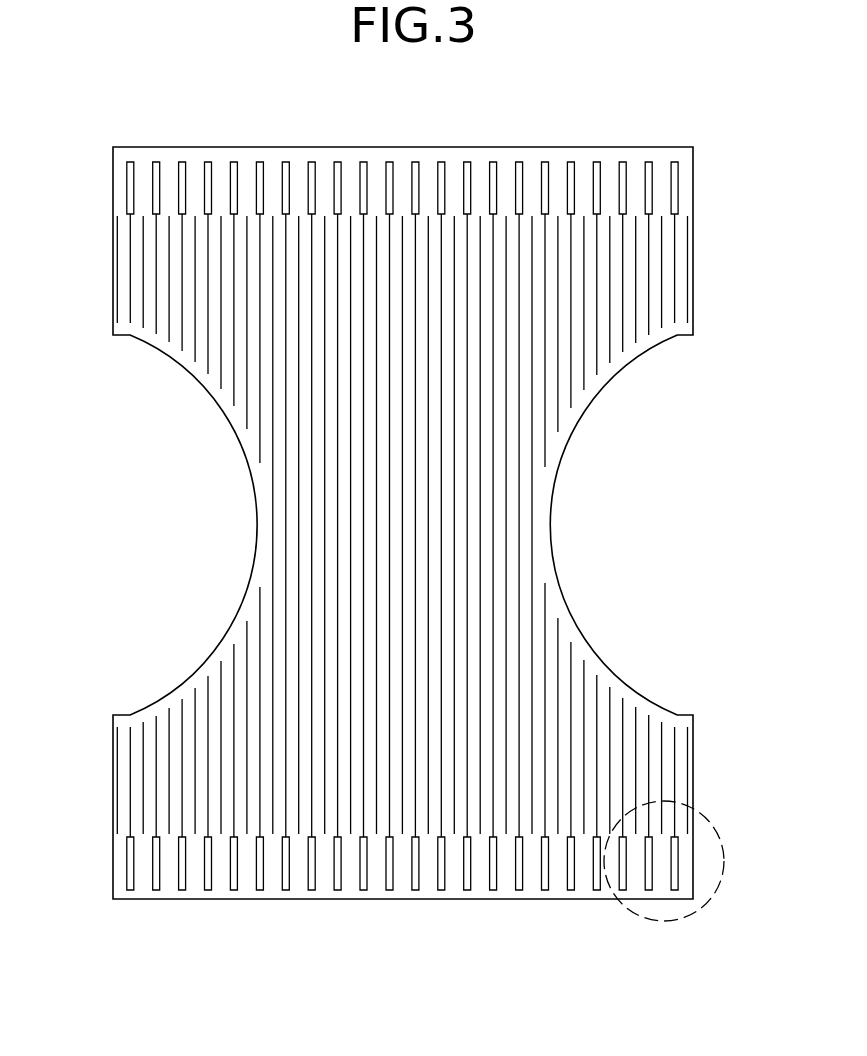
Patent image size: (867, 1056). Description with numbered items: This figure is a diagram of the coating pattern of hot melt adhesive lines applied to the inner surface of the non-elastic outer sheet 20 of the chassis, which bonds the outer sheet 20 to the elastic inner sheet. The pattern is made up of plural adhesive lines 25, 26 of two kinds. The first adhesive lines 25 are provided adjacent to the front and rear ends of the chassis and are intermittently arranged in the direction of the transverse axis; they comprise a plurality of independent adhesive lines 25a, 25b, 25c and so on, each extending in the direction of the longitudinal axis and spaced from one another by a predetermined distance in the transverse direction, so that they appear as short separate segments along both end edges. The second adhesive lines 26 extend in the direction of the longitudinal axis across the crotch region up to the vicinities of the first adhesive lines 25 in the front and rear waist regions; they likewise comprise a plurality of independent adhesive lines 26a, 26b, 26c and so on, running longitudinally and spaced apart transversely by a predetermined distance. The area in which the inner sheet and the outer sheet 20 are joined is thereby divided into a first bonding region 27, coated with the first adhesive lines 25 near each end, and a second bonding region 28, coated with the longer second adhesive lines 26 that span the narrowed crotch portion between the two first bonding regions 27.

The outer sheet 20 is at (460, 140).
The first adhesive lines 25 is at (474, 536).
The independent adhesive line 25a is at (678, 181).
The independent adhesive line 25b is at (649, 161).
The independent adhesive line 25c is at (623, 161).
The second adhesive lines 26 is at (466, 525).
The independent adhesive line 26a is at (689, 736).
The independent adhesive line 26b is at (676, 762).
The independent adhesive line 26c is at (663, 786).
The first bonding region 27 is at (80, 162).
The second bonding region 28 is at (80, 216).